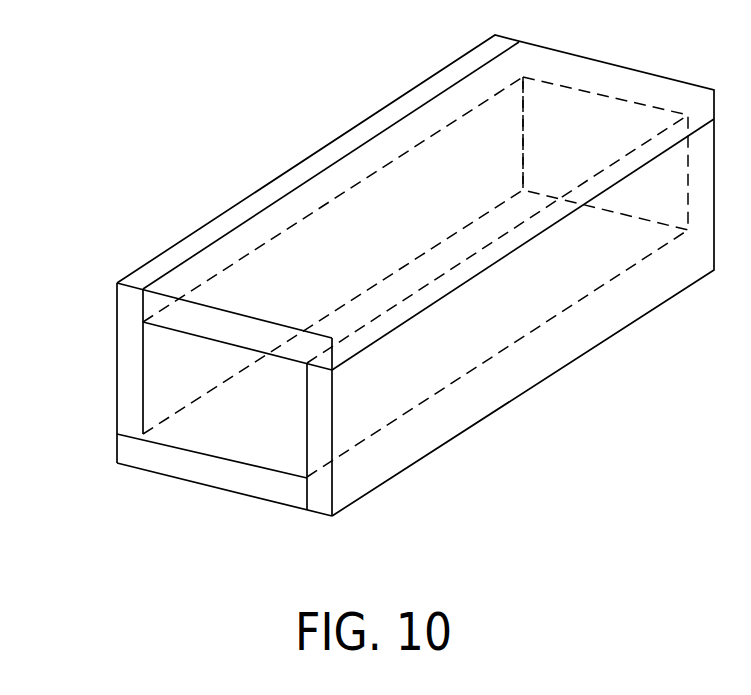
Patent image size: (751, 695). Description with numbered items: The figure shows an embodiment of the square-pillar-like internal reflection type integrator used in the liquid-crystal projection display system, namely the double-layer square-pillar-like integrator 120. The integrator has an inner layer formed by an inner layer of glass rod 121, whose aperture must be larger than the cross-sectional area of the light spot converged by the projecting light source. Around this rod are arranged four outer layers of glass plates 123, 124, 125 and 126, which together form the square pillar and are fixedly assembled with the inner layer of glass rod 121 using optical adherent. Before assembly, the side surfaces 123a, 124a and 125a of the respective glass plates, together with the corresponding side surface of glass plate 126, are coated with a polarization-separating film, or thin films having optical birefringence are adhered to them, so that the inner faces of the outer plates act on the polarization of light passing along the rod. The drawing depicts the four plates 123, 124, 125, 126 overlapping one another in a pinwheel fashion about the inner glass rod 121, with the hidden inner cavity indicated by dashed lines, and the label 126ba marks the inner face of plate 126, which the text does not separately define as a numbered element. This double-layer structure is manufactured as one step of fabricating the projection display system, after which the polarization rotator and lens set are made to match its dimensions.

The double-layer square-pillar-like integrator 120 is at (356, 100).
The inner layer of glass rod 121 is at (237, 423).
The outer layer of glass plate 123 is at (195, 308).
The side surface 123a is at (243, 349).
The outer layer of glass plate 124 is at (125, 393).
The side surface 124a is at (143, 378).
The outer layer of glass plate 125 is at (155, 460).
The side surface 125a is at (178, 443).
The outer layer of glass plate 126 is at (323, 422).
The right side wall inner surface 126ba is at (308, 427).